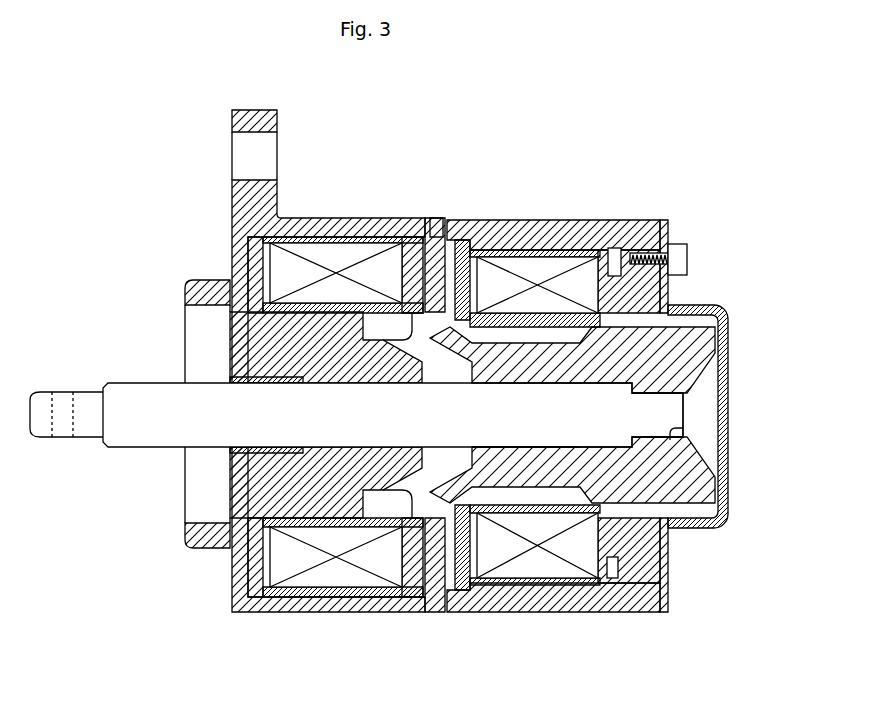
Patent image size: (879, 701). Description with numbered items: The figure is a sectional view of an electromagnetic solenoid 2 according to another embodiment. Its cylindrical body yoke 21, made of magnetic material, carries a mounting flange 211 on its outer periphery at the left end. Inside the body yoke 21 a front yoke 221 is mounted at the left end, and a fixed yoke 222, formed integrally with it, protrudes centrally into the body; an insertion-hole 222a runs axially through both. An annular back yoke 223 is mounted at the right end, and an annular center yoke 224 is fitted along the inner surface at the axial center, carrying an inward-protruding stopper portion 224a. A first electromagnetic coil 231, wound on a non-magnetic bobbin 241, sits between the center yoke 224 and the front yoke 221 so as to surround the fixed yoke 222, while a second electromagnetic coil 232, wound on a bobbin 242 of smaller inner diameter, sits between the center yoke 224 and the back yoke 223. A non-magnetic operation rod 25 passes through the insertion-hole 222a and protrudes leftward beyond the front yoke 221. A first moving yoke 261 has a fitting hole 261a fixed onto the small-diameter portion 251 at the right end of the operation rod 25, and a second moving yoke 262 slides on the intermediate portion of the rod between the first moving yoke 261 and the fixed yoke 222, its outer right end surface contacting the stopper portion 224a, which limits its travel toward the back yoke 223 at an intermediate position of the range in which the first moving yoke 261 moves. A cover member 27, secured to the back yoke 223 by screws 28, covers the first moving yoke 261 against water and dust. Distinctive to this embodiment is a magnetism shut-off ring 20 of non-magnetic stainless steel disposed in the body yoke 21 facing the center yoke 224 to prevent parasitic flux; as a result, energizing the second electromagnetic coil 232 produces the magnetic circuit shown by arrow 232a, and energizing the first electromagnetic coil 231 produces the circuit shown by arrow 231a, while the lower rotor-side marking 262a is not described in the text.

The electromagnetic solenoid 2 is at (470, 128).
The magnetism shut-off ring 20 is at (440, 218).
The body yoke 21 is at (531, 228).
The operation rod 25 is at (137, 440).
The cover member 27 is at (728, 369).
The screws 28 is at (680, 254).
The mounting flange 211 is at (252, 110).
The front yoke 221 is at (238, 246).
The fixed yoke 222 is at (245, 340).
The insertion-hole 222a is at (300, 383).
The back yoke 223 is at (650, 293).
The center yoke 224 is at (421, 235).
The stopper portion 224a is at (455, 240).
The first electromagnetic coil 231 is at (327, 250).
The arrow indicating magnetic flux of first coil 231a is at (317, 598).
The second electromagnetic coil 232 is at (565, 258).
The arrow indicating magnetic flux of second coil 232a is at (593, 602).
The bobbin 241 is at (386, 262).
The bobbin 242 is at (560, 262).
The small-diameter portion 251 is at (678, 412).
The first moving yoke 261 is at (702, 344).
The fitting hole 261a is at (684, 431).
The second moving yoke 262 is at (517, 492).
The rotor core portion 262a is at (483, 447).